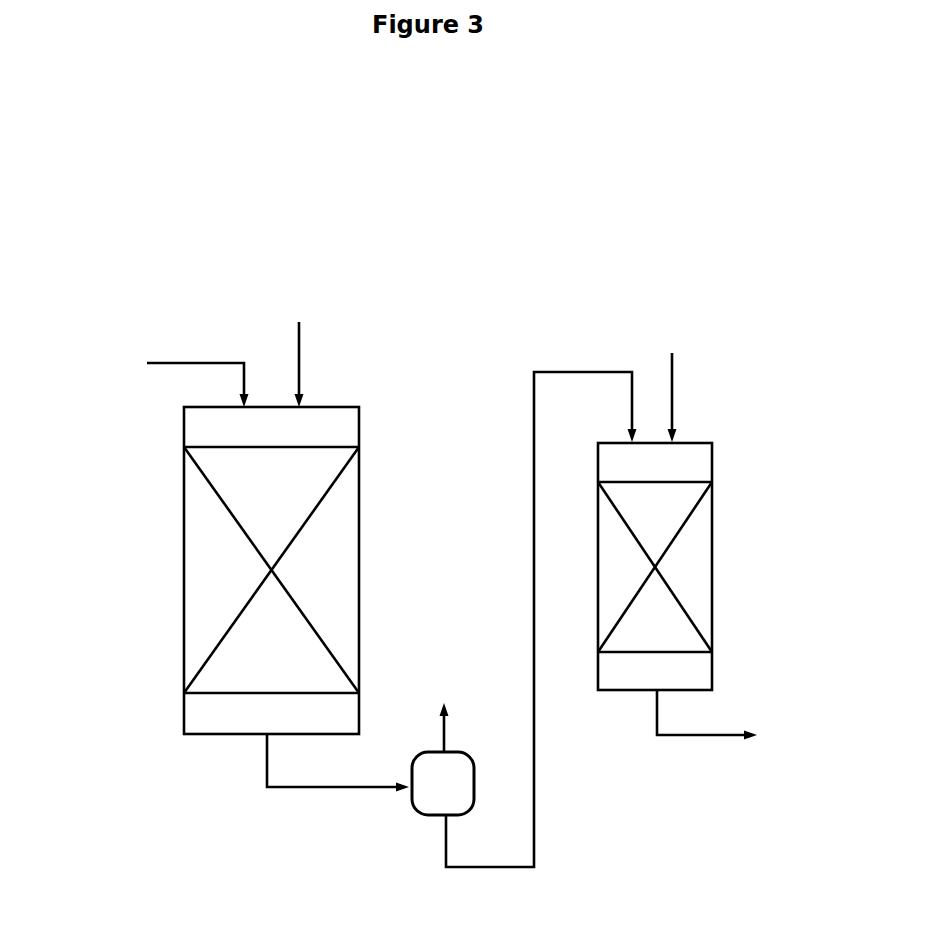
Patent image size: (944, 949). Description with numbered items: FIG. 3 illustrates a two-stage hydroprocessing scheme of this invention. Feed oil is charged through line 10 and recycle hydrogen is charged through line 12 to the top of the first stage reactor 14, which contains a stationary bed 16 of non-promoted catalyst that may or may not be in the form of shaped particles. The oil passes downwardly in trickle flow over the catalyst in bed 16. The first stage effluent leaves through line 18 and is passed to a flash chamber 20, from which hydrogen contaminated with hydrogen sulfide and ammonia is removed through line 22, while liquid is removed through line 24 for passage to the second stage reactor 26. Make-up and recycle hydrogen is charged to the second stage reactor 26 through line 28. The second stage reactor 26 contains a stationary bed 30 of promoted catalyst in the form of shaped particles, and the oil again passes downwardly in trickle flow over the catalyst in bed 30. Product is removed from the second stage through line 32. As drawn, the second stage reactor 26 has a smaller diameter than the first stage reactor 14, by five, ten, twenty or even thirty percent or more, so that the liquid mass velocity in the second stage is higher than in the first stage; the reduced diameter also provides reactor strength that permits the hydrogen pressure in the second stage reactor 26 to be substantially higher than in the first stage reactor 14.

The feed oil line 10 is at (197, 363).
The recycle hydrogen line 12 is at (308, 363).
The first stage reactor 14 is at (359, 427).
The stationary bed of non-promoted catalyst 16 is at (280, 483).
The first stage effluent line 18 is at (338, 763).
The flash chamber 20 is at (474, 768).
The hydrogen removal line 22 is at (463, 727).
The liquid line 24 is at (541, 636).
The second stage reactor 26 is at (712, 458).
The make-up and recycle hydrogen line 28 is at (677, 383).
The stationary bed of promoted catalyst 30 is at (670, 512).
The product line 32 is at (766, 729).